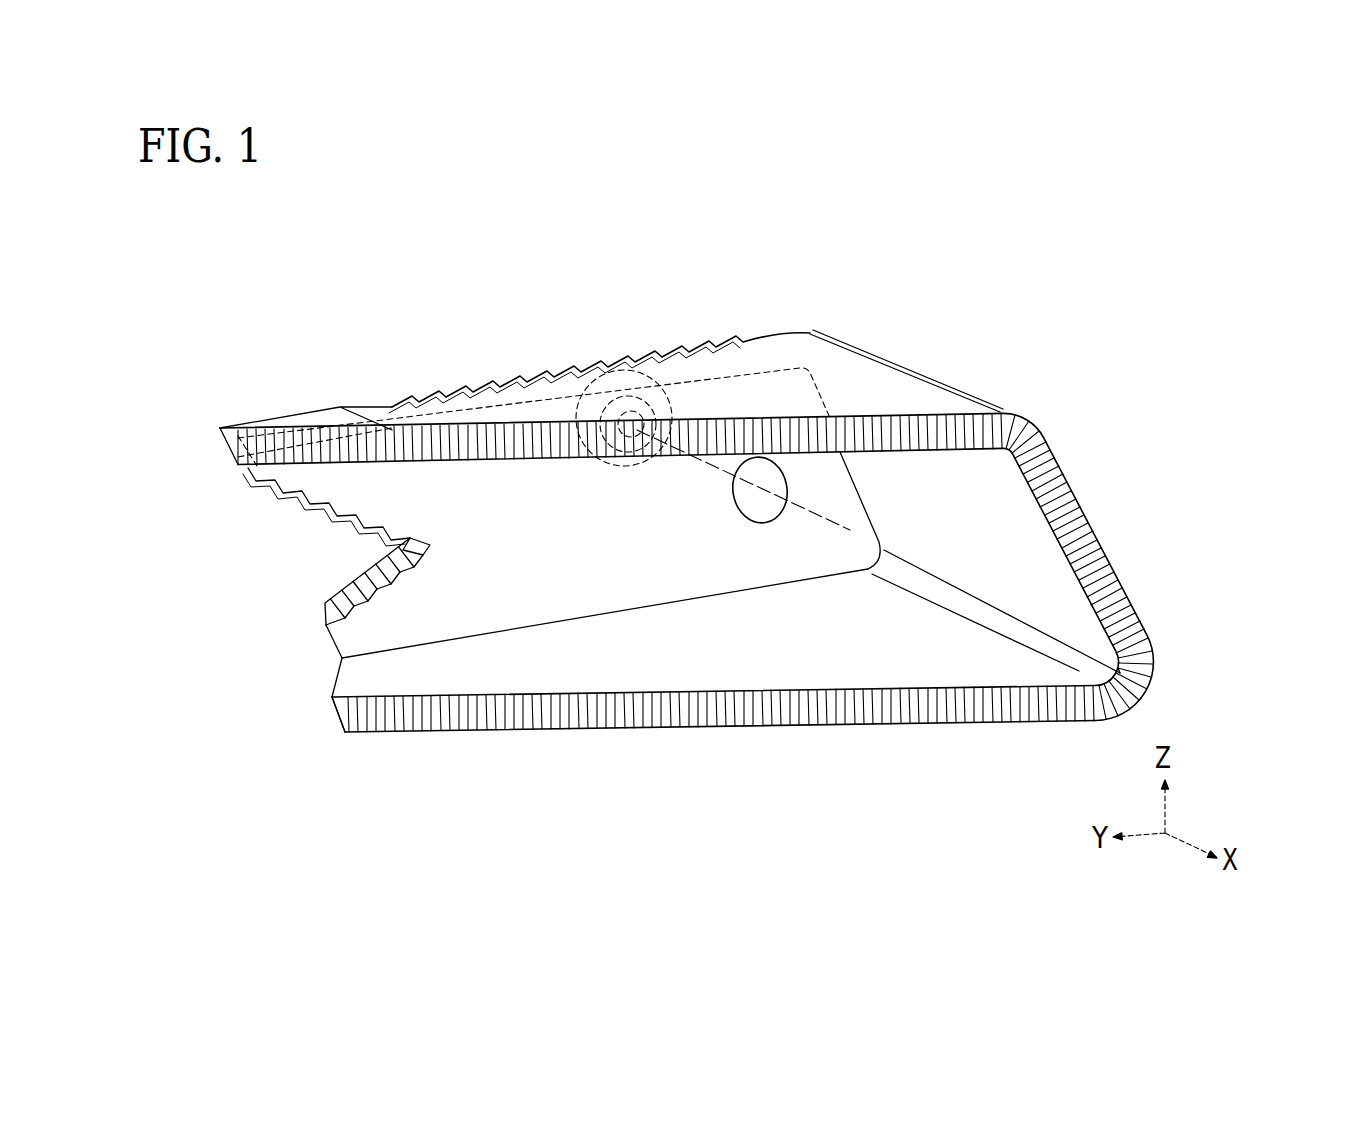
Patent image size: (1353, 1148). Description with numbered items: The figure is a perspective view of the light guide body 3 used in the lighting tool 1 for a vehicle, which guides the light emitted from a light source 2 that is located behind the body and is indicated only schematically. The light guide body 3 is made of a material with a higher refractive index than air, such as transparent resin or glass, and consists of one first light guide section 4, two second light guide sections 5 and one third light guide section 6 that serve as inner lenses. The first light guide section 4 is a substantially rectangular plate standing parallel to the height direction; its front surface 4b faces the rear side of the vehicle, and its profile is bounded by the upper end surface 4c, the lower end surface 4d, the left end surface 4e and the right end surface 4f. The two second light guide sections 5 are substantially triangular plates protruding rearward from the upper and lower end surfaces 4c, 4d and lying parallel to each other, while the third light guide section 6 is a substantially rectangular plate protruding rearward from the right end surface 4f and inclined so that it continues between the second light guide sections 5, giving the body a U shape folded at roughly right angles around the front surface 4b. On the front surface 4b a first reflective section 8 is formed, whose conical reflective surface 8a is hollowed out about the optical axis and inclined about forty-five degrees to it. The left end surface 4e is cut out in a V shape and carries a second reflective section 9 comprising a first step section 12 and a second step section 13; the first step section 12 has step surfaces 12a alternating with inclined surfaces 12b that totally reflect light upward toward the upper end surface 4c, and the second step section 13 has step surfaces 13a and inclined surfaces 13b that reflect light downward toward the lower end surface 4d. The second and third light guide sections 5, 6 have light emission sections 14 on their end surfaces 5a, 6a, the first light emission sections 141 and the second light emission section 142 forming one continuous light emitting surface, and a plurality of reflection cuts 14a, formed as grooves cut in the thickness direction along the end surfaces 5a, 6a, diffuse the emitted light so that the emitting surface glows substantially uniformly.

The lighting tool for a vehicle 1 is at (289, 355).
The light source 2 is at (631, 376).
The light guide body 3 is at (929, 370).
The first light guide section 4 is at (484, 490).
The front surface 4b is at (455, 490).
The upper end surface (second end surface) 4c is at (525, 405).
The lower end surface (third end surface) 4d is at (569, 622).
The left end surface (first end surface) 4e is at (382, 540).
The right end surface (fourth end surface) 4f is at (862, 493).
The second light guide section 5 is at (690, 400).
The end surface (front surface) of second light guide section 5a is at (728, 709).
The third light guide section 6 is at (1053, 598).
The end surface (front surface) of third light guide section 6a is at (1127, 630).
The first reflective section 8 is at (795, 628).
The reflective surface 8a is at (762, 500).
The second reflective section 9 is at (260, 548).
The first step section 12 is at (150, 541).
The step surfaces 12a is at (318, 498).
The inclined surfaces 12b is at (310, 494).
The second step section 13 is at (185, 636).
The step surfaces 13a is at (354, 584).
The inclined surfaces 13b is at (362, 578).
The light emission sections 14 is at (823, 427).
The reflection cuts 14a is at (757, 423).
The first light emission sections 141 is at (666, 572).
The second light emission section 142 is at (1079, 567).